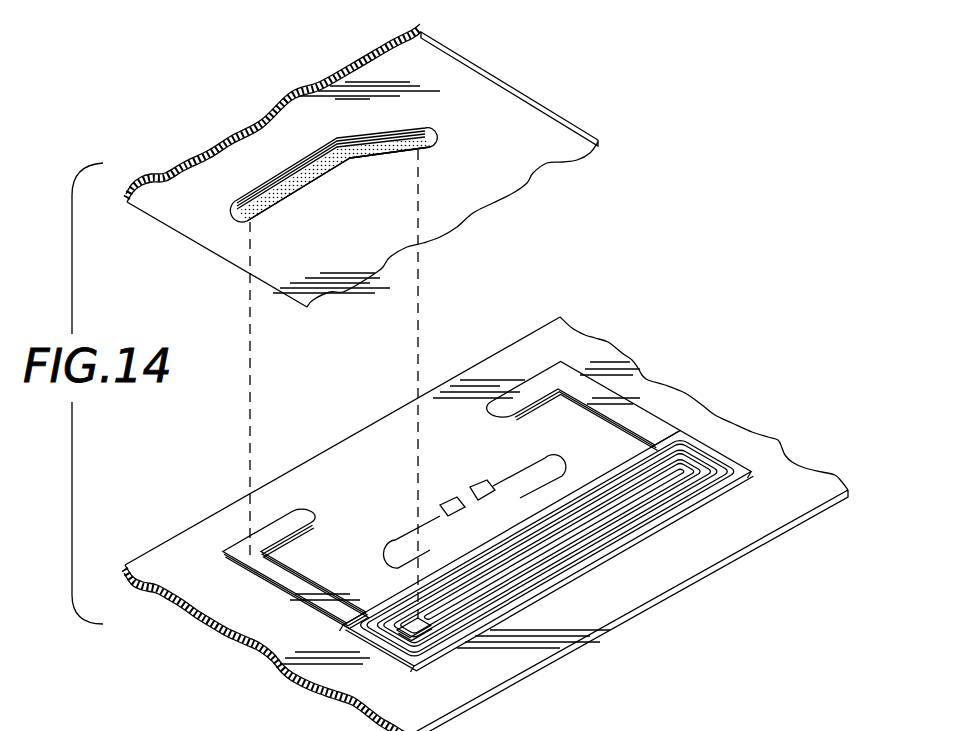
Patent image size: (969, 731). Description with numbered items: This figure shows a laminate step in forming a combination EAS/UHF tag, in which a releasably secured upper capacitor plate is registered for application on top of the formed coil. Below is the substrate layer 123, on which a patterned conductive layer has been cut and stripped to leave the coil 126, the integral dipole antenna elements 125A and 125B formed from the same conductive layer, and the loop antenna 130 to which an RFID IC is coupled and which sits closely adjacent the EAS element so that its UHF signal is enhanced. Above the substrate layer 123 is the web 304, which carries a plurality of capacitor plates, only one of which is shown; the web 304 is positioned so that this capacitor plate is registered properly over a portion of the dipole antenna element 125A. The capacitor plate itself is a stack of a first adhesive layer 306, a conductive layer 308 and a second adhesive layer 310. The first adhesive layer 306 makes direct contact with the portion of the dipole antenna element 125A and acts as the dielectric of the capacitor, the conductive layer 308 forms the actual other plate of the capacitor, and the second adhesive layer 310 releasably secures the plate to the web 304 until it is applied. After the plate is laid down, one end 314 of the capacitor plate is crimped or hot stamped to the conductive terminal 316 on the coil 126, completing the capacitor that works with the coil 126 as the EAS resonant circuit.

The web 304 is at (548, 105).
The first adhesive layer 306 is at (215, 225).
The conductive layer 308 is at (432, 142).
The second adhesive layer 310 is at (430, 130).
The end of the capacitor plate 314 is at (407, 158).
The substrate layer 123 is at (755, 548).
The dipole antenna element 125A is at (250, 568).
The dipole antenna element 125B is at (575, 385).
The coil 126 is at (695, 455).
The loop antenna 130 is at (490, 487).
The conductive terminal 316 is at (420, 632).